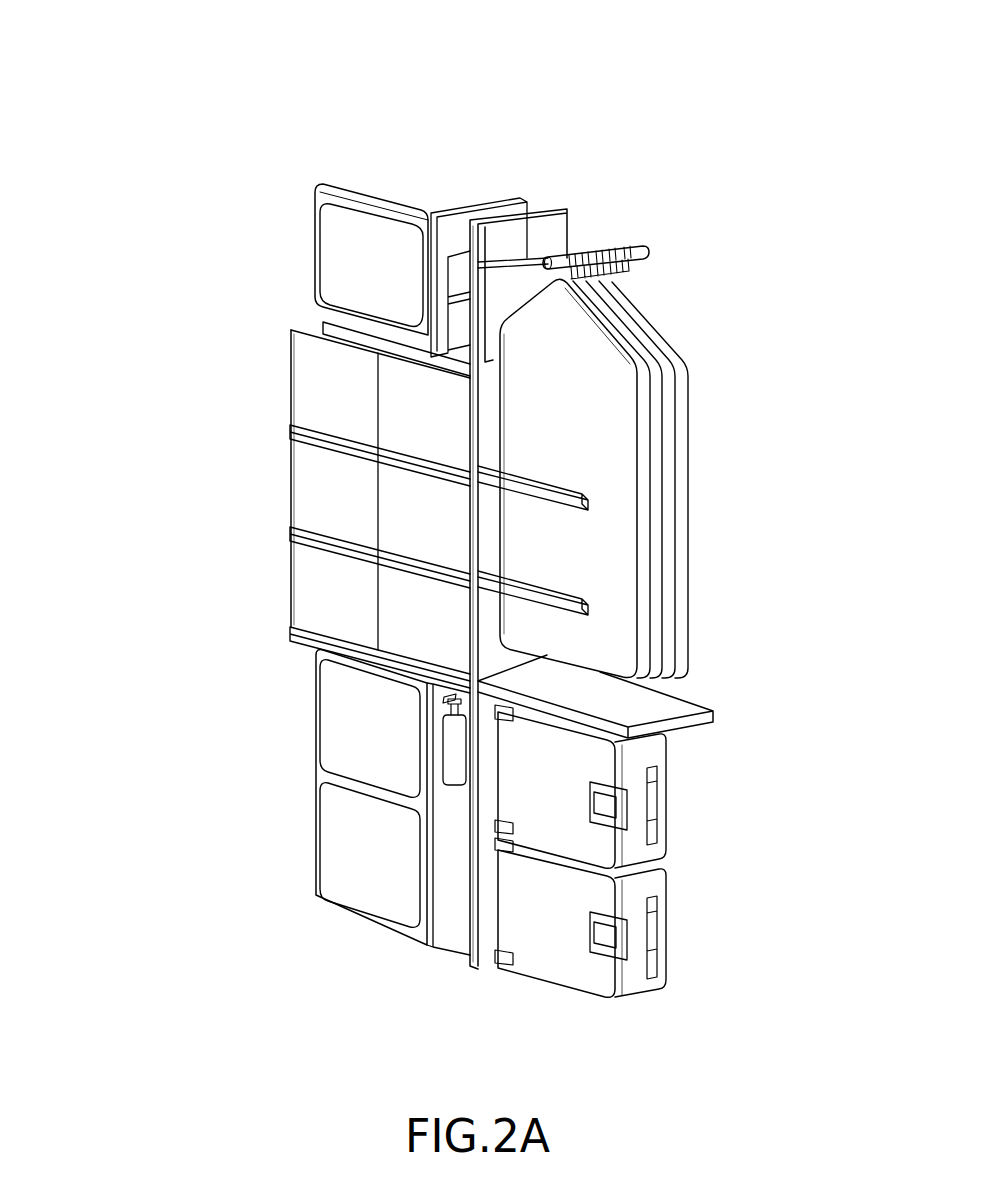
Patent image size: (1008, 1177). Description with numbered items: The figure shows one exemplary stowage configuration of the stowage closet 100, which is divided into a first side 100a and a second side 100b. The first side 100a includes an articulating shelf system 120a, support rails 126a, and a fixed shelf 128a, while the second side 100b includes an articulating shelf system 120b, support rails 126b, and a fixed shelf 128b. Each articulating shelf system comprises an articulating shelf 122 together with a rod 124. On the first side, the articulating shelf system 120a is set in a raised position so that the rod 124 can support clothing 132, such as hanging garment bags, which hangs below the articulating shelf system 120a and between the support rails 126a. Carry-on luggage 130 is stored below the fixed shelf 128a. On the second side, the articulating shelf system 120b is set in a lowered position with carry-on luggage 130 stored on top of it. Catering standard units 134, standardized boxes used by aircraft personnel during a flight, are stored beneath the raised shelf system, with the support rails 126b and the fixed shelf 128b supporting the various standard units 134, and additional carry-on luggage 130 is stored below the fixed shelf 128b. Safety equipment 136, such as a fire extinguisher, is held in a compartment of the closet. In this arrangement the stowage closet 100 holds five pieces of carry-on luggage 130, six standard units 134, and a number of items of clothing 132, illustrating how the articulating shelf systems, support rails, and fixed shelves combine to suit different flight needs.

The stowage closet 100 is at (298, 69).
The first side 100a is at (759, 260).
The second side 100b is at (160, 174).
The articulating shelf system 120a is at (691, 215).
The articulating shelf system 120b is at (260, 299).
The articulating shelf 122 is at (540, 253).
The rod 124 is at (637, 255).
The support rails 126a is at (585, 512).
The support rails 126b is at (294, 428).
The fixed shelf 128a is at (640, 714).
The fixed shelf 128b is at (290, 627).
The carry-on luggage 130 is at (345, 242).
The clothing 132 is at (677, 482).
The catering standard units 134 is at (312, 583).
The safety equipment 136 is at (455, 738).